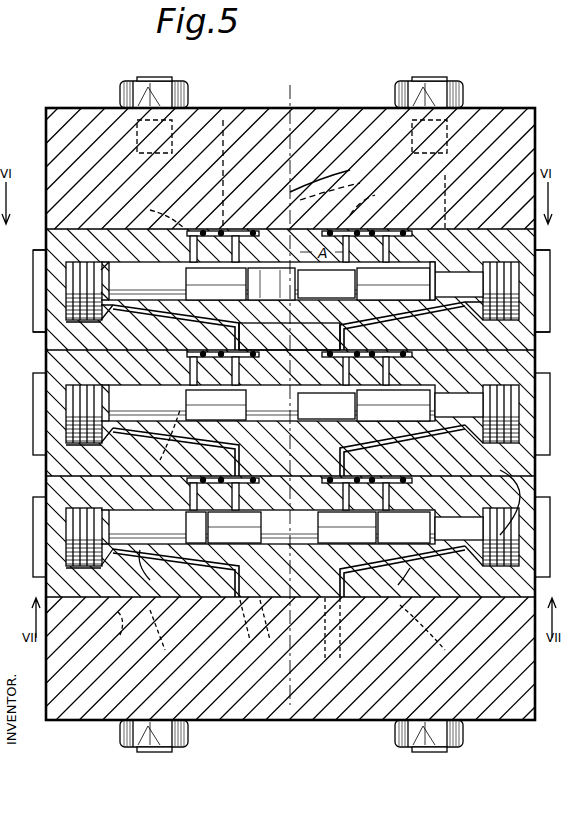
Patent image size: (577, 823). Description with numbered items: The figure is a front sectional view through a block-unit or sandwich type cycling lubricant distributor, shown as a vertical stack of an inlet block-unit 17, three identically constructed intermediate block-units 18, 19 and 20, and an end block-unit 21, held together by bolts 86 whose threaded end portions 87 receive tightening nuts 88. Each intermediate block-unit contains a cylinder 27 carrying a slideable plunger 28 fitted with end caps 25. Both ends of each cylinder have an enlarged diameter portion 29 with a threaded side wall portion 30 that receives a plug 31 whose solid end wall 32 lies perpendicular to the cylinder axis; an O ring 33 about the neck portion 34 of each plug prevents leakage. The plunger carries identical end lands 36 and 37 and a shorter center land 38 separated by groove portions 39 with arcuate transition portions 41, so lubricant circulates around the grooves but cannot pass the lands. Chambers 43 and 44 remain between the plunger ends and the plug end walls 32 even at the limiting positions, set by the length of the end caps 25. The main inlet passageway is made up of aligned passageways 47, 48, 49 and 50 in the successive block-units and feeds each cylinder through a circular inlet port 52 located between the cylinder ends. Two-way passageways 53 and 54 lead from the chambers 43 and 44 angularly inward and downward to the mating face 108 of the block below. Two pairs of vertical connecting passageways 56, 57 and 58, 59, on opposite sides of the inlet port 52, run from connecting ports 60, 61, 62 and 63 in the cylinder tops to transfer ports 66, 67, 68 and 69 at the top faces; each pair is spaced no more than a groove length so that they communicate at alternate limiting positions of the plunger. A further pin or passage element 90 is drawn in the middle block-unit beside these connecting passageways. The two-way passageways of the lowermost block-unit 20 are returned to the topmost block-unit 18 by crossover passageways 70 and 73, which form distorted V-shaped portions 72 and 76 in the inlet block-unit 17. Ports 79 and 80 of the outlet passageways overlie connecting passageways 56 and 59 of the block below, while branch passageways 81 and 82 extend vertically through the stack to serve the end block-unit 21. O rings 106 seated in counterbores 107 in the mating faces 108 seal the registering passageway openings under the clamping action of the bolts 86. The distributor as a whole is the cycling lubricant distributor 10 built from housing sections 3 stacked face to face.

The housing 3 is at (552, 406).
The pump assembly 10 is at (540, 474).
The inlet block-unit 17 is at (46, 143).
The intermediate block-unit 18 is at (46, 346).
The intermediate block-unit 19 is at (46, 465).
The intermediate block-unit 20 is at (46, 590).
The end block-unit 21 is at (46, 715).
The end cap 25 is at (101, 283).
The cylinder 27 is at (148, 268).
The plunger 28 is at (122, 268).
The enlarged diameter portion 29 is at (92, 322).
The threaded side wall portion 30 is at (88, 255).
The plug 31 is at (33, 282).
The end wall 32 is at (360, 580).
The O ring 33 is at (46, 334).
The neck portion 34 is at (46, 254).
The end land 36 is at (180, 262).
The end land 37 is at (400, 262).
The center land 38 is at (289, 332).
The groove portion 39 is at (216, 394).
The transition portion 41 is at (165, 440).
The chamber 43 is at (118, 312).
The chamber 44 is at (470, 310).
The passageway 47 is at (350, 170).
The passageway 48 is at (373, 202).
The passageway 49 is at (393, 405).
The passageway 50 is at (267, 630).
The inlet port 52 is at (317, 281).
The two-way passageway 53 is at (172, 316).
The two-way passageway 54 is at (398, 320).
The connecting passageway 56 is at (190, 478).
The connecting passageway 57 is at (232, 490).
The connecting passageway 58 is at (390, 470).
The connecting passageway 59 is at (350, 492).
The connecting port 60 is at (180, 508).
The connecting port 61 is at (234, 527).
The connecting port 62 is at (347, 527).
The connecting port 63 is at (394, 522).
The transfer port 66 is at (194, 248).
The transfer port 67 is at (271, 271).
The transfer port 68 is at (347, 248).
The transfer port 69 is at (448, 271).
The crossover passageway 70 is at (328, 660).
The distorted V-shaped portion 72 is at (223, 120).
The cross-over passageway 73 is at (186, 636).
The distorted V-shaped portion 76 is at (366, 183).
The port 79 is at (178, 587).
The port 80 is at (400, 581).
The branch passageway 81 is at (104, 636).
The branch passageway 82 is at (435, 635).
The bolt 86 is at (150, 77).
The threaded end portion 87 is at (100, 114).
The tightening nut 88 is at (182, 97).
The pin 90 is at (440, 358).
The O ring 106 is at (160, 210).
The counterbore 107 is at (196, 364).
The mating face 108 is at (538, 518).